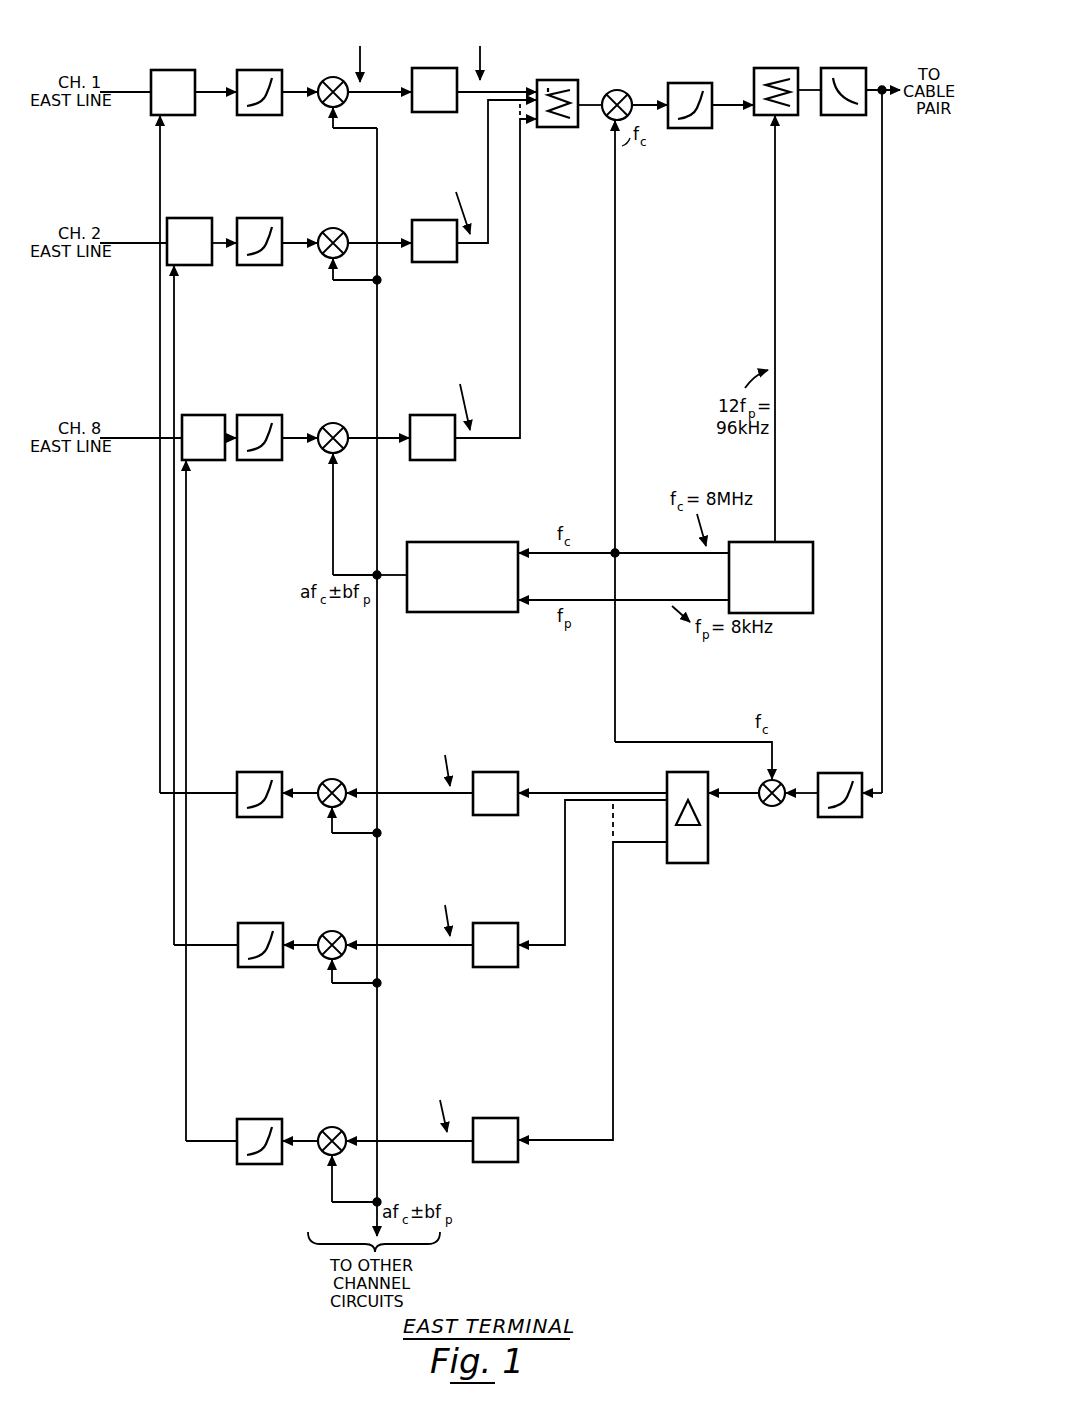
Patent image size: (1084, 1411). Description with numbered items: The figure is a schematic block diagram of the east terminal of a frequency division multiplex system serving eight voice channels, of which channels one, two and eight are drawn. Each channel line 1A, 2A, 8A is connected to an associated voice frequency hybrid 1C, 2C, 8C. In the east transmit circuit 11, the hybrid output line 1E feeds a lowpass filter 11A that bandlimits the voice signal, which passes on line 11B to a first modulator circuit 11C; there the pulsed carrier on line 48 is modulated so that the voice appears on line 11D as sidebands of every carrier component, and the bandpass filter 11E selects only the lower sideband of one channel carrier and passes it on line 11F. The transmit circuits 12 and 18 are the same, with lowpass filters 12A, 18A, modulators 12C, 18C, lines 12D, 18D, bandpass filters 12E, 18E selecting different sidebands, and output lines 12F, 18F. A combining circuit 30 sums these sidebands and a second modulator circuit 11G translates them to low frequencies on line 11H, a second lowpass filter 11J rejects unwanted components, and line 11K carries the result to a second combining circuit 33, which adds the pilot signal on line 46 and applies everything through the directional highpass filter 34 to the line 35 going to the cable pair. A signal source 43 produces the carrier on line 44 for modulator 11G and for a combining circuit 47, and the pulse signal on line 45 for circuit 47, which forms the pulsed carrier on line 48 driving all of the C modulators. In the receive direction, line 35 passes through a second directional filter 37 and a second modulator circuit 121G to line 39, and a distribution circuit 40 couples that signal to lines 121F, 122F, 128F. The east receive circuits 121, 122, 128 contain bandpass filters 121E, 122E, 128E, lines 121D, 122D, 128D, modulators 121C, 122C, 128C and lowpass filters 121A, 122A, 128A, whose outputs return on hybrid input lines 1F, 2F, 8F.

The channel line 1A is at (125, 91).
The voice frequency hybrid 1C is at (165, 70).
The hybrid output line 1E is at (205, 84).
The hybrid input line 1F is at (158, 176).
The east transmit circuit 11 is at (256, 42).
The lowpass filter 11A is at (246, 72).
The bandlimited voice line 11B is at (297, 84).
The first modulator circuit 11C is at (318, 78).
The modulator output line 11D is at (372, 90).
The bandpass filter 11E is at (416, 70).
The bandpass filter output line 11F is at (481, 90).
The second modulator circuit 11G is at (604, 91).
The second modulator output line 11H is at (640, 94).
The second lowpass filter 11J is at (676, 82).
The lowpass filter output line 11K is at (720, 94).
The channel line 2A is at (125, 241).
The voice frequency hybrid 2C is at (177, 220).
The hybrid input line 2F is at (166, 928).
The east transmit circuit 12 is at (258, 186).
The lowpass filter 12A is at (244, 222).
The first modulator circuit 12C is at (317, 228).
The modulator output line 12D is at (388, 240).
The bandpass filter 12E is at (416, 220).
The bandpass filter output line 12F is at (488, 232).
The channel line 8A is at (127, 436).
The voice frequency hybrid 8C is at (191, 415).
The hybrid input line 8F is at (177, 1125).
The east transmit circuit 18 is at (258, 383).
The lowpass filter 18A is at (244, 417).
The first modulator circuit 18C is at (316, 424).
The modulator output line 18D is at (388, 436).
The bandpass filter 18E is at (414, 415).
The bandpass filter output line 18F is at (519, 419).
The combining circuit 30 is at (541, 80).
The second combining circuit 33 is at (763, 71).
The directional highpass filter 34 is at (829, 71).
The line 35 is at (883, 80).
The second directional filter 37 is at (824, 774).
The line 39 is at (728, 788).
The distribution circuit 40 is at (678, 774).
The signal source 43 is at (783, 544).
The carrier signal line 44 is at (636, 555).
The pulse signal line 45 is at (637, 610).
The pilot signal line 46 is at (769, 225).
The combining circuit 47 is at (479, 542).
The pulsed carrier line 48 is at (386, 560).
The east receive circuit 121 is at (260, 745).
The lowpass filter 121A is at (238, 775).
The first modulator circuit 121C is at (321, 782).
The modulator input line 121D is at (397, 790).
The bandpass filter 121E is at (475, 774).
The bandpass filter input line 121F is at (583, 788).
The second modulator circuit 121G is at (778, 780).
The east receive circuit 122 is at (263, 895).
The lowpass filter 122A is at (238, 925).
The first modulator circuit 122C is at (319, 932).
The modulator input line 122D is at (397, 940).
The bandpass filter 122E is at (475, 924).
The bandpass filter input line 122F is at (566, 930).
The east receive circuit 128 is at (263, 1090).
The lowpass filter 128A is at (238, 1122).
The first modulator circuit 128C is at (319, 1129).
The modulator input line 128D is at (397, 1137).
The bandpass filter 128E is at (475, 1121).
The bandpass filter input line 128F is at (601, 1127).